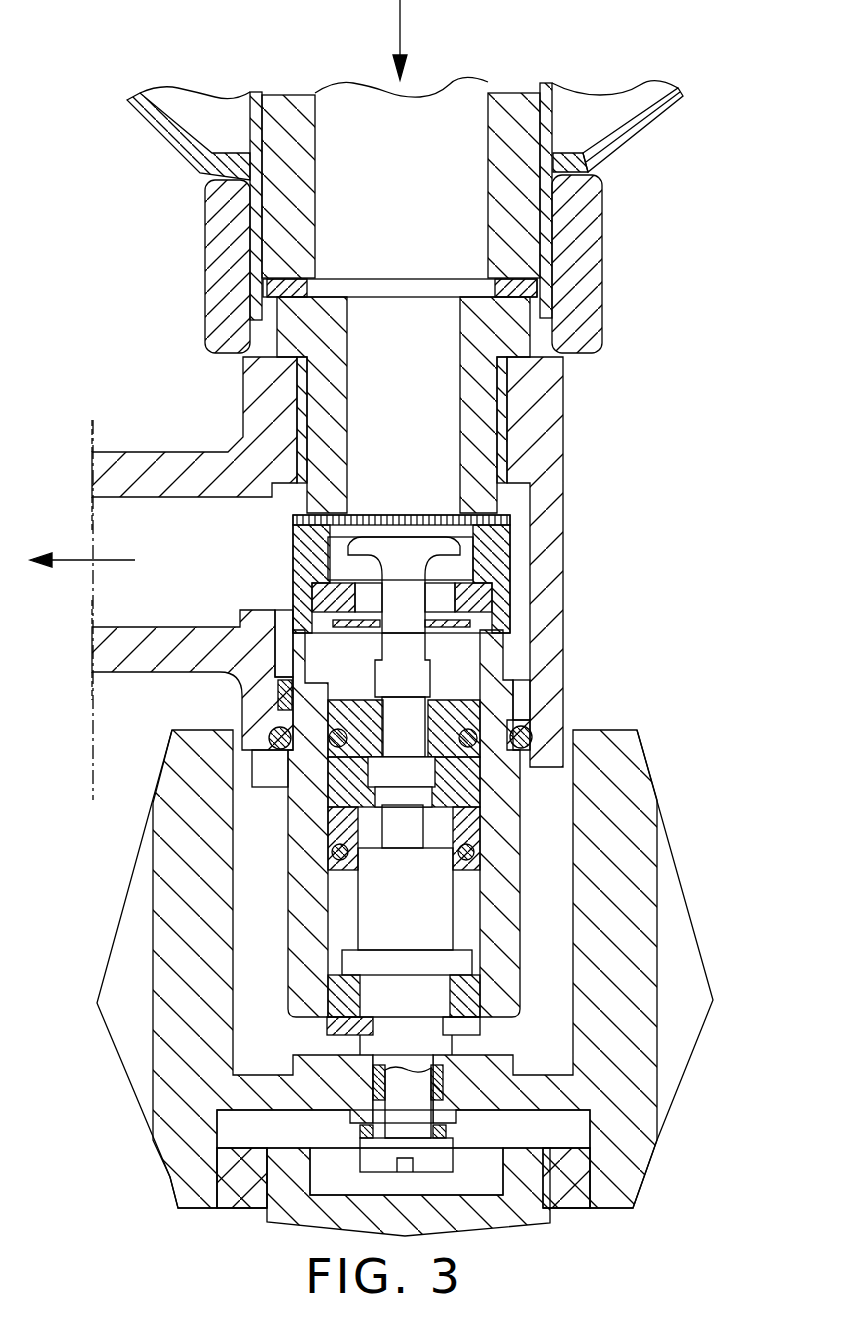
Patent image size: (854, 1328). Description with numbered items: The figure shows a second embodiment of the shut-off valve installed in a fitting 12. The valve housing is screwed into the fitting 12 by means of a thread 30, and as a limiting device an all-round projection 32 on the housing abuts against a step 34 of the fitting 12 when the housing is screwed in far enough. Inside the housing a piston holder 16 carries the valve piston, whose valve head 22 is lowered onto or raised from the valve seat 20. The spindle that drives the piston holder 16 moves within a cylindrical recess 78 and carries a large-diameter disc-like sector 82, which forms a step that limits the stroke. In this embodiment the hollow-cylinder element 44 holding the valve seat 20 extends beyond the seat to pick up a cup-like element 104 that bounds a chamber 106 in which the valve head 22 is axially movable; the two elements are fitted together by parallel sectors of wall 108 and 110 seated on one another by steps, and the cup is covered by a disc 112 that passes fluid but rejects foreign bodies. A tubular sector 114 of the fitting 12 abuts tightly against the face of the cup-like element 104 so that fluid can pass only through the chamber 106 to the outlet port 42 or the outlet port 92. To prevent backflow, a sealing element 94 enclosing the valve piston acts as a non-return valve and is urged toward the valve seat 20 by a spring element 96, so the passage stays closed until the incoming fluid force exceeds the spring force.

The fitting 12 is at (140, 343).
The outlet port 92 is at (152, 505).
The valve head 22 is at (380, 548).
The disc 112 is at (429, 520).
The tubular sector 114 is at (431, 600).
The cup-like element 104 is at (500, 545).
The sector of wall 108 is at (470, 563).
The chamber 106 is at (490, 580).
The valve seat 20 is at (505, 625).
The element of hollow cylinder design 44 is at (515, 648).
The sealing element 94 is at (512, 665).
The spring element 96 is at (528, 700).
The sector of wall 110 is at (318, 562).
The outlet port 42 is at (325, 670).
The thread 30 is at (305, 710).
The step 34 is at (262, 758).
The all-round projection 32 is at (270, 770).
The piston holder 16 is at (337, 808).
The disc-like sector 82 is at (417, 797).
The cylindrical recess 78 is at (420, 773).